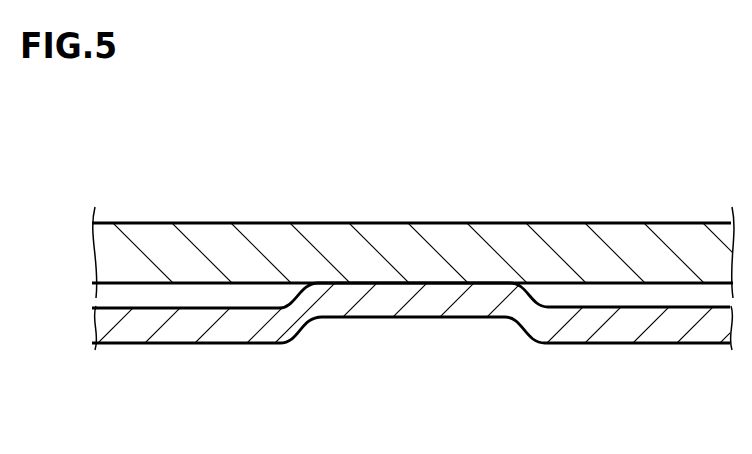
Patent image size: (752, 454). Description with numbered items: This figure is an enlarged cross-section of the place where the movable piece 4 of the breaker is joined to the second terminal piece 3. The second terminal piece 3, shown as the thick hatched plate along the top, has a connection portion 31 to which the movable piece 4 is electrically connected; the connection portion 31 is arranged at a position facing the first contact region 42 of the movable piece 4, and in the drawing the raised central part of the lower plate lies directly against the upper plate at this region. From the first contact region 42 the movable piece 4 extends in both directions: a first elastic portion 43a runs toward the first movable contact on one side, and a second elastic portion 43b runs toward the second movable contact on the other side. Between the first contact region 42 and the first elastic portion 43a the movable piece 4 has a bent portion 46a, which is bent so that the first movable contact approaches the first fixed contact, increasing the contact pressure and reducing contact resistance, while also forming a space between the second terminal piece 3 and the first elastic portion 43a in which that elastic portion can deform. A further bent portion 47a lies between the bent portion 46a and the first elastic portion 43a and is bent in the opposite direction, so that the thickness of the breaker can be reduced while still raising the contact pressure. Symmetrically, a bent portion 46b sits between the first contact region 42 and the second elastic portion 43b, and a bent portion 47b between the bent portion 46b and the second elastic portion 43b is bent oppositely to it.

The second terminal piece 3 is at (578, 250).
The connection portion 31 is at (412, 258).
The movable piece 4 is at (422, 358).
The first contact region 42 is at (418, 303).
The first elastic portion 43a is at (133, 327).
The second elastic portion 43b is at (667, 325).
The bent portion 46a is at (307, 303).
The bent portion 46b is at (518, 303).
The bent portion 47a is at (237, 323).
The bent portion 47b is at (580, 323).